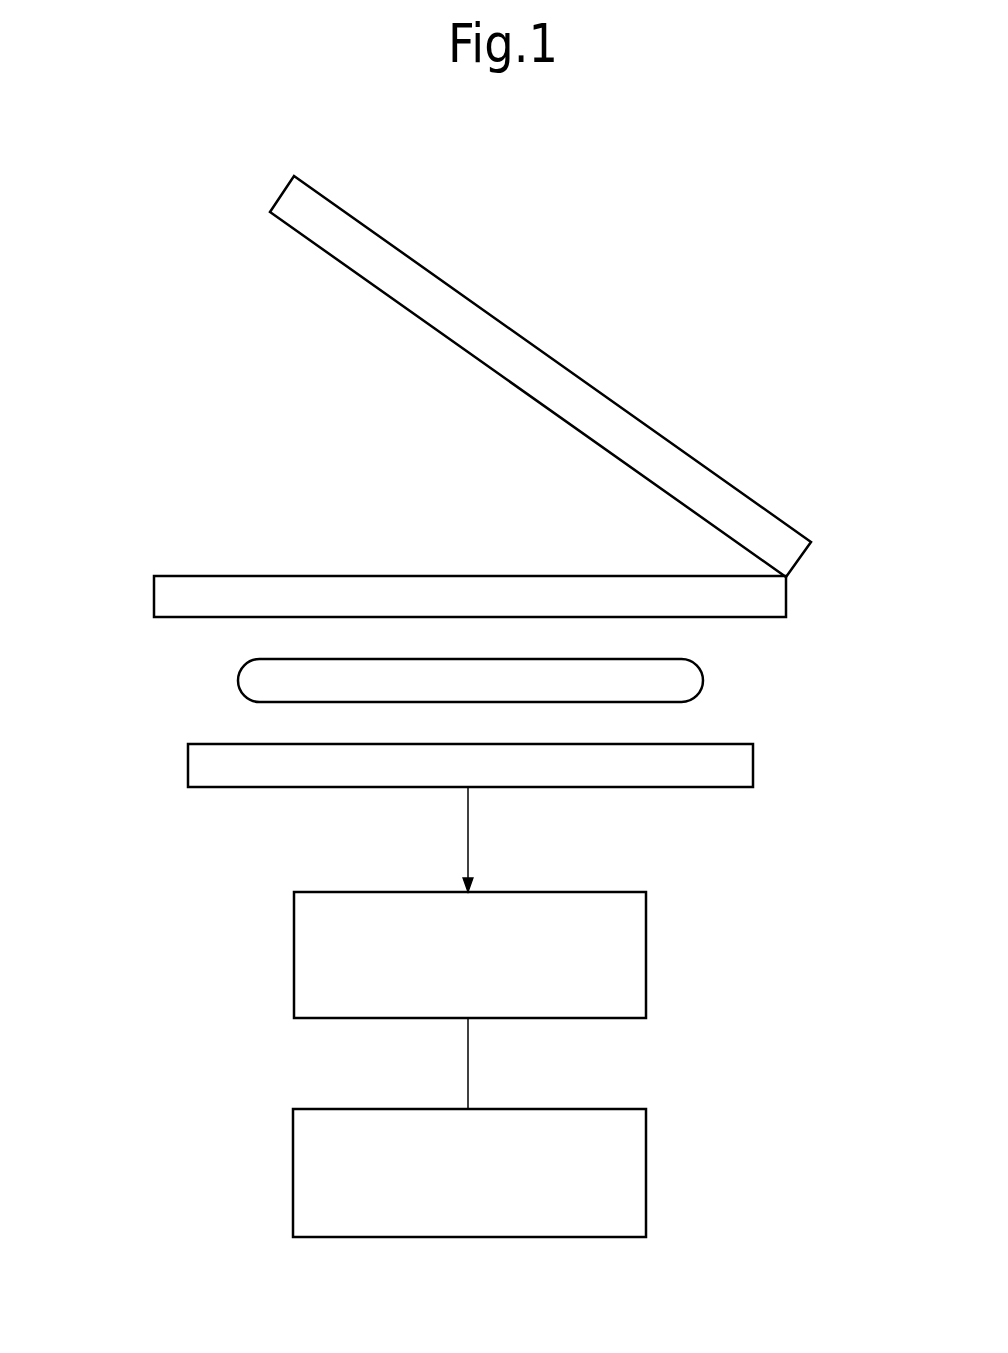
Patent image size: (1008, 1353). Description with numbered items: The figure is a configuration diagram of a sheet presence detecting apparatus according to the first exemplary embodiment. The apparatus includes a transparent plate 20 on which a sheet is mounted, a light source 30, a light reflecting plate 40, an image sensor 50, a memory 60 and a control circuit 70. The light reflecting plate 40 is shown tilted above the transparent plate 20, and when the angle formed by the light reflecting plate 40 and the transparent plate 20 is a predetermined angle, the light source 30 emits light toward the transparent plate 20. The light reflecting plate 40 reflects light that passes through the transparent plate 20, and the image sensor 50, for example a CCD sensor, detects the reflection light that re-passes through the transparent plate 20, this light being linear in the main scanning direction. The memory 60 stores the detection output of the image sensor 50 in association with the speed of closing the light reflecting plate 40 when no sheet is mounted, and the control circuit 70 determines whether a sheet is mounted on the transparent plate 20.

The transparent plate 20 is at (154, 593).
The light source 30 is at (238, 680).
The light reflecting plate 40 is at (597, 383).
The image sensor 50 is at (753, 763).
The memory 60 is at (646, 1142).
The control circuit 70 is at (646, 925).